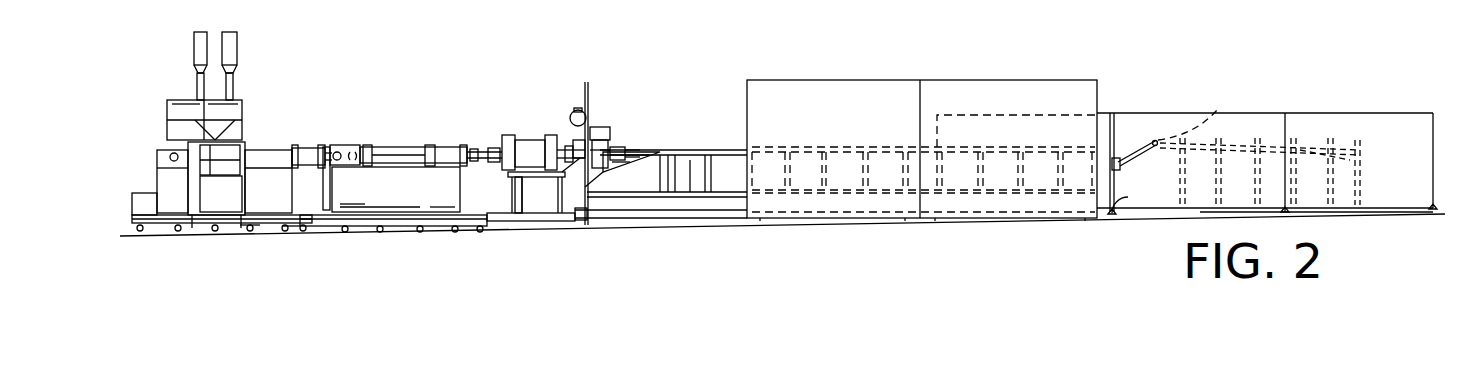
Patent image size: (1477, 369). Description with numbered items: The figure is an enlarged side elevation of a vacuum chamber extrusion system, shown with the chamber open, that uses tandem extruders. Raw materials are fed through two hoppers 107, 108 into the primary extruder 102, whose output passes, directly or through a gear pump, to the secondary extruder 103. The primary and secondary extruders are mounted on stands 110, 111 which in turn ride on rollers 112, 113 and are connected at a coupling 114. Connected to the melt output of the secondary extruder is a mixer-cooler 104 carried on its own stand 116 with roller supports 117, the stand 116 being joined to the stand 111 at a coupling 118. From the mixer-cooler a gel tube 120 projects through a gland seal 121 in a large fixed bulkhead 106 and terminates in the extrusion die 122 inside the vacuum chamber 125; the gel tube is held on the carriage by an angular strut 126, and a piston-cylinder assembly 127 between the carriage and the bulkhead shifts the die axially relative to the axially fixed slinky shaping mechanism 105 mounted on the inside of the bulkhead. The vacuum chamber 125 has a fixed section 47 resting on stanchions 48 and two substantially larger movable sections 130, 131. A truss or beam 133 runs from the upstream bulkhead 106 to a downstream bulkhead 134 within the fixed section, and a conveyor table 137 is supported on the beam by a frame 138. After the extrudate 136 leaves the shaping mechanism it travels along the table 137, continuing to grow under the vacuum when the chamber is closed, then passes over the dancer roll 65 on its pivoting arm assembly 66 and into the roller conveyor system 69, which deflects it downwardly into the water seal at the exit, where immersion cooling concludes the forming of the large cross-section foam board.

The fixed section 47 is at (1222, 112).
The stanchions 48 is at (1289, 216).
The dancer roll 65 is at (1156, 140).
The pivoting arm assembly 66 is at (1133, 150).
The roller conveyor system 69 is at (1308, 147).
The primary extruder 102 is at (258, 136).
The secondary extruder 103 is at (400, 140).
The mixer-cooler 104 is at (527, 133).
The slinky shaping mechanism 105 is at (618, 122).
The fixed bulkhead 106 is at (592, 100).
The hopper 107 is at (194, 50).
The hopper 108 is at (237, 50).
The stand 110 is at (222, 185).
The stand 111 is at (405, 188).
The rollers 112 is at (249, 226).
The rollers 113 is at (420, 228).
The coupling 114 is at (291, 228).
The stand 116 is at (520, 190).
The roller supports 117 is at (528, 222).
The coupling 118 is at (480, 224).
The gel tube 120 is at (577, 147).
The gland seal 121 is at (584, 102).
The extrusion die 122 is at (622, 147).
The vacuum chamber 125 is at (1030, 63).
The angular strut 126 is at (583, 170).
The piston-cylinder assembly 127 is at (578, 226).
The movable section 130 is at (838, 80).
The movable section 131 is at (1005, 80).
The truss or beam 133 is at (685, 205).
The downstream bulkhead 134 is at (1128, 212).
The extrudate 136 is at (703, 150).
The conveyor table 137 is at (698, 168).
The frame 138 is at (826, 170).